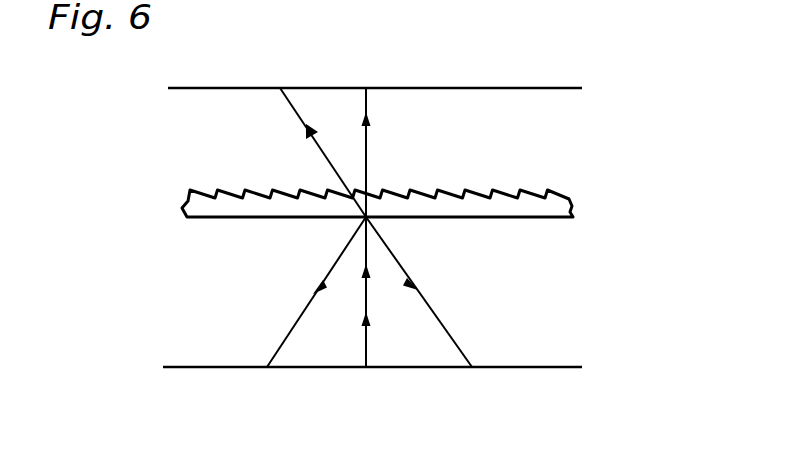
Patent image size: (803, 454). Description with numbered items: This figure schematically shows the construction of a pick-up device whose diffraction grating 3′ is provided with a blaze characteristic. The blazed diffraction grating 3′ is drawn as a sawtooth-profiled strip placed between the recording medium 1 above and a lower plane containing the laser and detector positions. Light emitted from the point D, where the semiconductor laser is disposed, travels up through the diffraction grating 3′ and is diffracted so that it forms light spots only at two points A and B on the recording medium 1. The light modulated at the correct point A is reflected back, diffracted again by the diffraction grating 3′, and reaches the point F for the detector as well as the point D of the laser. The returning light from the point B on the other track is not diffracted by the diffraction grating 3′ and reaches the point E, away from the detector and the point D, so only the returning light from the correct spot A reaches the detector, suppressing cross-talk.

The recording medium 1 is at (582, 88).
The diffraction grating 3′ is at (572, 202).
The point A is at (363, 137).
The point B is at (318, 137).
The point D is at (366, 309).
The point E is at (425, 309).
The point F is at (311, 309).